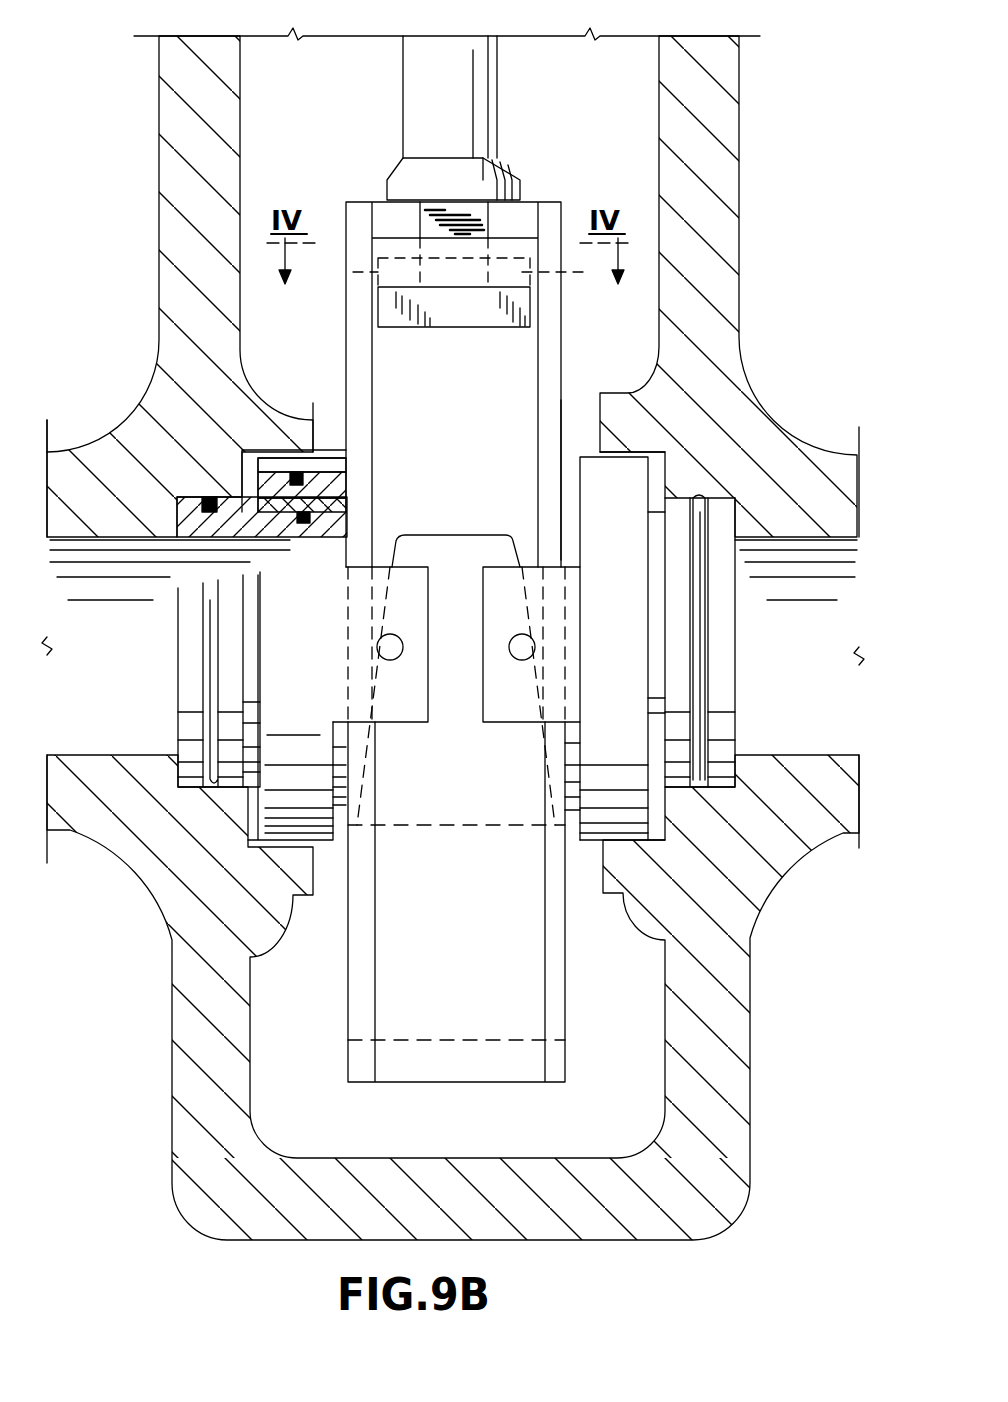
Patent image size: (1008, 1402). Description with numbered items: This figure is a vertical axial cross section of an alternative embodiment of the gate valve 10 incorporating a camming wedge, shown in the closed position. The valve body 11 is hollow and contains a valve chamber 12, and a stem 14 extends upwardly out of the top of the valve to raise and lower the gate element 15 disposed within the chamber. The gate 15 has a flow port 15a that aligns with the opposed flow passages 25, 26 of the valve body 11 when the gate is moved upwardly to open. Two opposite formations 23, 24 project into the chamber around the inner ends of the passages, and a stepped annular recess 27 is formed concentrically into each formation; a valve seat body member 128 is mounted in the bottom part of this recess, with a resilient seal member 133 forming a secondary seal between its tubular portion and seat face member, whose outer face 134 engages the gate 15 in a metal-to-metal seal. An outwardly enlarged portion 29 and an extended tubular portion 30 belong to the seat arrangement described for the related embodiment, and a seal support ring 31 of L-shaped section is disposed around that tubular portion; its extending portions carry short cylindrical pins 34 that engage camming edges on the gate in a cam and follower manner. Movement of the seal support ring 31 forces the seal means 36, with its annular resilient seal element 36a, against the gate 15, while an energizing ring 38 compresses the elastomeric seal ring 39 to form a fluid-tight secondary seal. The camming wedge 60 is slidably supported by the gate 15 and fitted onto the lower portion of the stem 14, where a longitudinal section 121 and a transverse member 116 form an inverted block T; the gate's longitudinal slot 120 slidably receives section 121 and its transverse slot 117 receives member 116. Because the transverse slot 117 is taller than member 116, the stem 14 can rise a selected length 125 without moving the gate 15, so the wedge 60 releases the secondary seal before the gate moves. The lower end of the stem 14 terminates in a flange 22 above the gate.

The gate valve 10 is at (768, 72).
The valve body 11 is at (742, 283).
The valve chamber 12 is at (657, 132).
The stem 14 is at (442, 53).
The gate element 15 is at (525, 212).
The flow port 15a is at (441, 828).
The stem flange 22 is at (400, 165).
The formation 23 is at (318, 400).
The formation 24 is at (540, 395).
The flow passage 25 is at (72, 752).
The flow passage 26 is at (810, 752).
The stepped annular recess 27 is at (635, 460).
The outwardly enlarged portion 29 is at (182, 497).
The extended tubular portion 30 is at (178, 588).
The seal support ring 31 is at (346, 444).
The cylindrical pin 34 is at (522, 647).
The seal means 36 is at (350, 463).
The annular resilient seal element 36a is at (346, 485).
The energizing ring 38 is at (262, 475).
The seal ring 39 is at (295, 470).
The camming wedge 60 is at (462, 358).
The transverse member 116 is at (520, 308).
The transverse slot 117 is at (547, 270).
The longitudinal slot 120 is at (488, 240).
The longitudinal section 121 is at (430, 230).
The selected length 125 is at (378, 258).
The valve seat body member 128 is at (150, 462).
The resilient seal member 133 is at (300, 522).
The outer face 134 is at (346, 510).